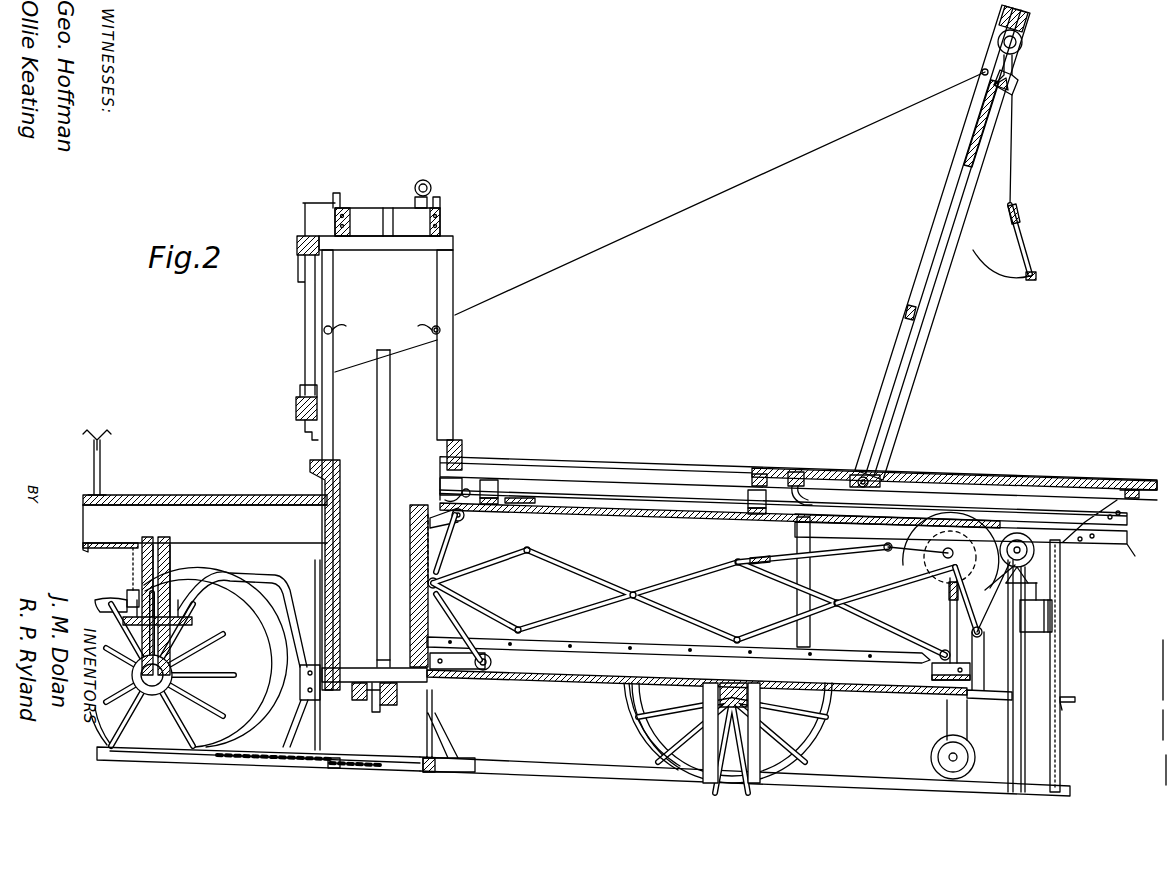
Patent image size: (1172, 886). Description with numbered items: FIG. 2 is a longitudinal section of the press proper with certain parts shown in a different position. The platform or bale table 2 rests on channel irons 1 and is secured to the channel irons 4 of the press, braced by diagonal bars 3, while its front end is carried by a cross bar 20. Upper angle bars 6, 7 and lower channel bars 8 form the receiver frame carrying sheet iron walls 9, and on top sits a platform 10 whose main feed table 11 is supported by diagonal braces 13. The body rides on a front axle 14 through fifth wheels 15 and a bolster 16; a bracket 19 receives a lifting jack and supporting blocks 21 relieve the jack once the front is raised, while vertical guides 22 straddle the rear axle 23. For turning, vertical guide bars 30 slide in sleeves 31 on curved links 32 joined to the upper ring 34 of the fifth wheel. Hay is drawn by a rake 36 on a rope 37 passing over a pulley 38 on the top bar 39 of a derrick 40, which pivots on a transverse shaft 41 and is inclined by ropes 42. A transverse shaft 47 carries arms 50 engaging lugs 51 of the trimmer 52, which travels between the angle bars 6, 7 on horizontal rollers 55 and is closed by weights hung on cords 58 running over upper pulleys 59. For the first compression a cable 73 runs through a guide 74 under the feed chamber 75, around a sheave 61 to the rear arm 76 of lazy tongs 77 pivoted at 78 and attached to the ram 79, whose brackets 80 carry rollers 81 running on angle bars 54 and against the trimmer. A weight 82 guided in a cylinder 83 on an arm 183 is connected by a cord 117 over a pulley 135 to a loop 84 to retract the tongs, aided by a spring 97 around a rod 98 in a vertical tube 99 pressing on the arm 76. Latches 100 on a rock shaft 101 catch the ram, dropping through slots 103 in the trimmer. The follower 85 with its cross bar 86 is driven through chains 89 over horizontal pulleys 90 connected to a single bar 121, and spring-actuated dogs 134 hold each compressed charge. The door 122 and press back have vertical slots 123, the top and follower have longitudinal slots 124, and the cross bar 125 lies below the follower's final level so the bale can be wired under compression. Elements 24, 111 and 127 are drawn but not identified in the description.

The channel irons 1 is at (188, 513).
The platform or bale table 2 is at (240, 513).
The diagonal bars 3 is at (188, 657).
The channel irons of the press proper 4 is at (463, 414).
The upper horizontal angle bar 6 is at (1125, 512).
The upper horizontal angle bar 7 is at (1128, 545).
The lower horizontal channel bars 8 is at (595, 682).
The sheet iron walls 9 is at (829, 603).
The platform 10 is at (690, 466).
The main feed table 11 is at (980, 475).
The diagonal braces 13 is at (1050, 566).
The front axle 14 is at (180, 663).
The fifth wheels 15 is at (200, 612).
The bolster 16 is at (172, 585).
The bracket 19 is at (120, 605).
The cross bar 20 is at (83, 543).
The supporting blocks 21 is at (128, 590).
The vertical guides 22 is at (805, 762).
The rear axle 23 is at (715, 705).
The wheel guard 24 is at (632, 702).
The vertical guide bars 30 is at (315, 592).
The sleeve 31 is at (300, 680).
The curved link 32 is at (275, 580).
The upper ring of the fifth wheel 34 is at (210, 600).
The rake 36 is at (1027, 250).
The rope 37 is at (1015, 147).
The pulley 38 is at (1016, 88).
The top bar of the derrick 39 is at (1022, 40).
The derrick 40 is at (920, 360).
The transverse shaft 41 is at (872, 482).
The ropes 42 is at (720, 190).
The transverse shaft 47 is at (800, 477).
The arms 50 is at (815, 492).
The lugs 51 is at (540, 502).
The trimmer 52 is at (615, 512).
The angle bars 54 is at (628, 645).
The horizontal rollers 55 is at (522, 490).
The cords 58 is at (412, 205).
The upper pulleys 59 is at (428, 185).
The sheave 61 is at (960, 780).
The cable 73 is at (550, 763).
The guide 74 is at (435, 772).
The feed chamber 75 is at (366, 460).
The rear arm of the lazy tongs 76 is at (985, 611).
The lazy tongs 77 is at (605, 582).
The pivot 78 is at (905, 635).
The ram 79 is at (412, 572).
The brackets 80 is at (462, 520).
The rollers 81 is at (497, 513).
The weight 82 is at (1052, 612).
The cylinder 83 is at (1062, 675).
The loop 84 is at (770, 562).
The follower 85 is at (366, 642).
The cross bar of the follower 86 is at (380, 708).
The chains 89 is at (255, 763).
The horizontal pulleys 90 is at (340, 768).
The spring 97 is at (940, 598).
The rod 98 is at (960, 572).
The vertical tube 99 is at (948, 615).
The latches 100 is at (440, 488).
The transverse rock shaft 101 is at (468, 492).
The slots or recesses 103 is at (430, 515).
The bracket 111 is at (932, 672).
The cord 117 is at (900, 562).
The single bar 121 is at (165, 760).
The door 122 is at (305, 315).
The vertical slots 123 is at (455, 300).
The longitudinal slots 124 is at (453, 243).
The cross bar 125 is at (297, 408).
The post 127 is at (100, 437).
The spring-actuated dogs 134 is at (439, 330).
The pulley 135 is at (1036, 551).
The arm 183 is at (1065, 705).